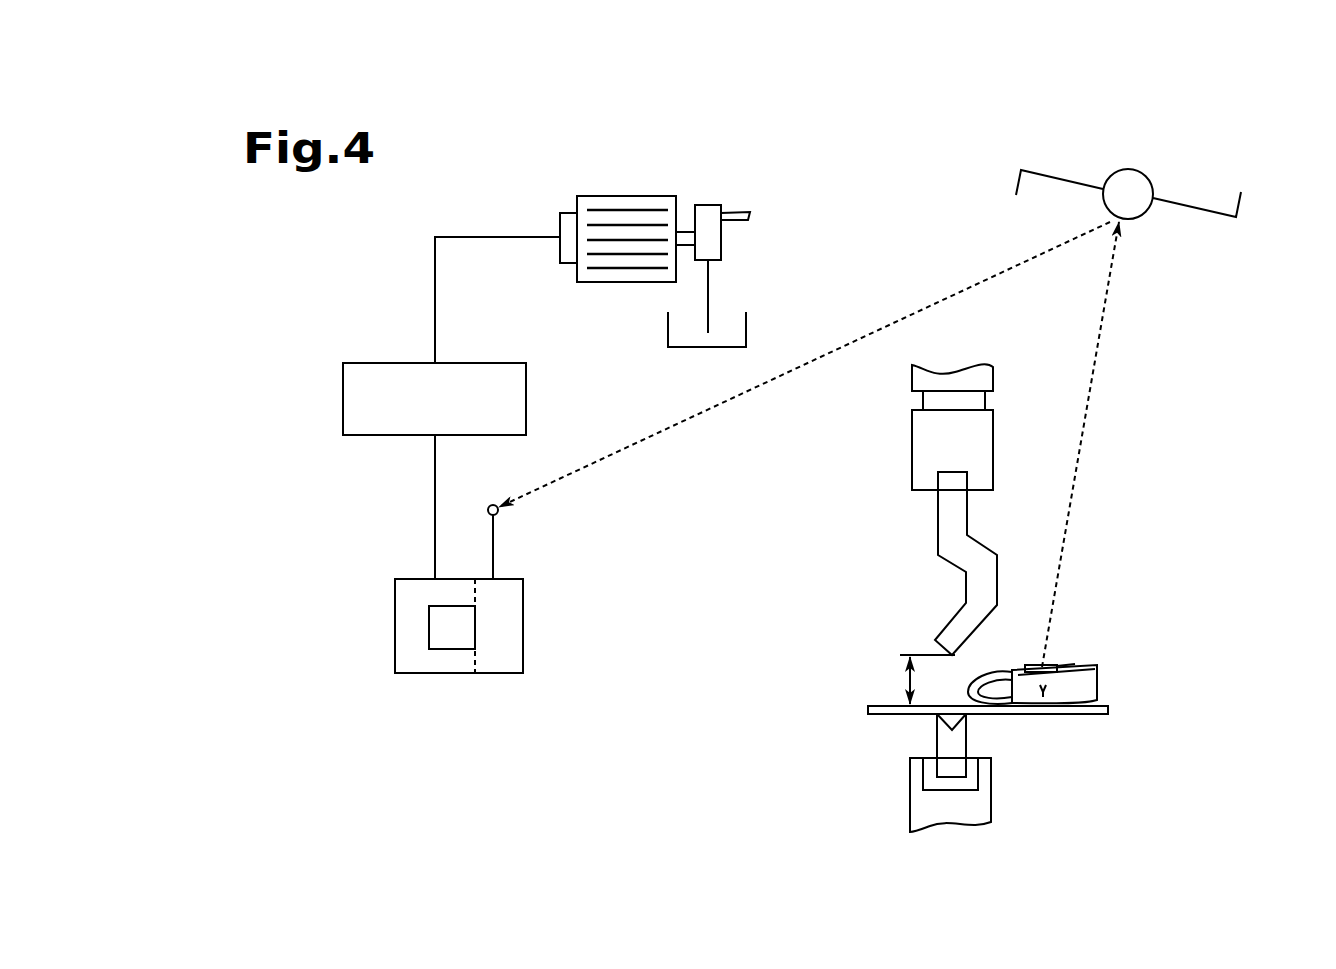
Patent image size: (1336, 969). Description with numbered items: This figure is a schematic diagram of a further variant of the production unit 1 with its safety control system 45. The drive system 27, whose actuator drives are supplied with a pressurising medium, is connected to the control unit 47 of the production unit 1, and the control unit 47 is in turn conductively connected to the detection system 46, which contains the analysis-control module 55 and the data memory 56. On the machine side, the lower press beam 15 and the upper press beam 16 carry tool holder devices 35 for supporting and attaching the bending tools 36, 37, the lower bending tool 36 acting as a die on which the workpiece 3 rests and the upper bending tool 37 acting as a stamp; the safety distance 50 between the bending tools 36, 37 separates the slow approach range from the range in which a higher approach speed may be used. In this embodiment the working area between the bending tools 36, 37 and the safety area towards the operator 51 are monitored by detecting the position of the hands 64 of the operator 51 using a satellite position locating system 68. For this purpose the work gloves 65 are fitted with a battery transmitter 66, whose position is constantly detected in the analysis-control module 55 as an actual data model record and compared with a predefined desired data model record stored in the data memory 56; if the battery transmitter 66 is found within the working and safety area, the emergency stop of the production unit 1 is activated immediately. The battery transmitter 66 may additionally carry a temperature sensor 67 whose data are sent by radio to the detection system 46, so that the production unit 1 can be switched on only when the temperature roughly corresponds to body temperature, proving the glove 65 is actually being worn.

The production unit 1 is at (1021, 577).
The workpiece 3 is at (868, 709).
The press beam 15 is at (973, 810).
The press beam 16 is at (912, 380).
The drive system 27 is at (782, 215).
The tool holder device 35 is at (918, 457).
The bending tool 36 is at (942, 738).
The bending tool 37 is at (958, 560).
The safety control system 45 is at (353, 653).
The detection system 46 is at (413, 662).
The control unit 47 is at (355, 409).
The safety distance 50 is at (905, 683).
The operator 51 is at (1009, 761).
The analysis-control module 55 is at (491, 648).
The data memory 56 is at (457, 628).
The hands 64 is at (1147, 646).
The work glove 65 is at (1095, 698).
The battery transmitter 66 is at (1045, 668).
The temperature sensor 67 is at (1070, 665).
The satellite position locating system 68 is at (1180, 152).